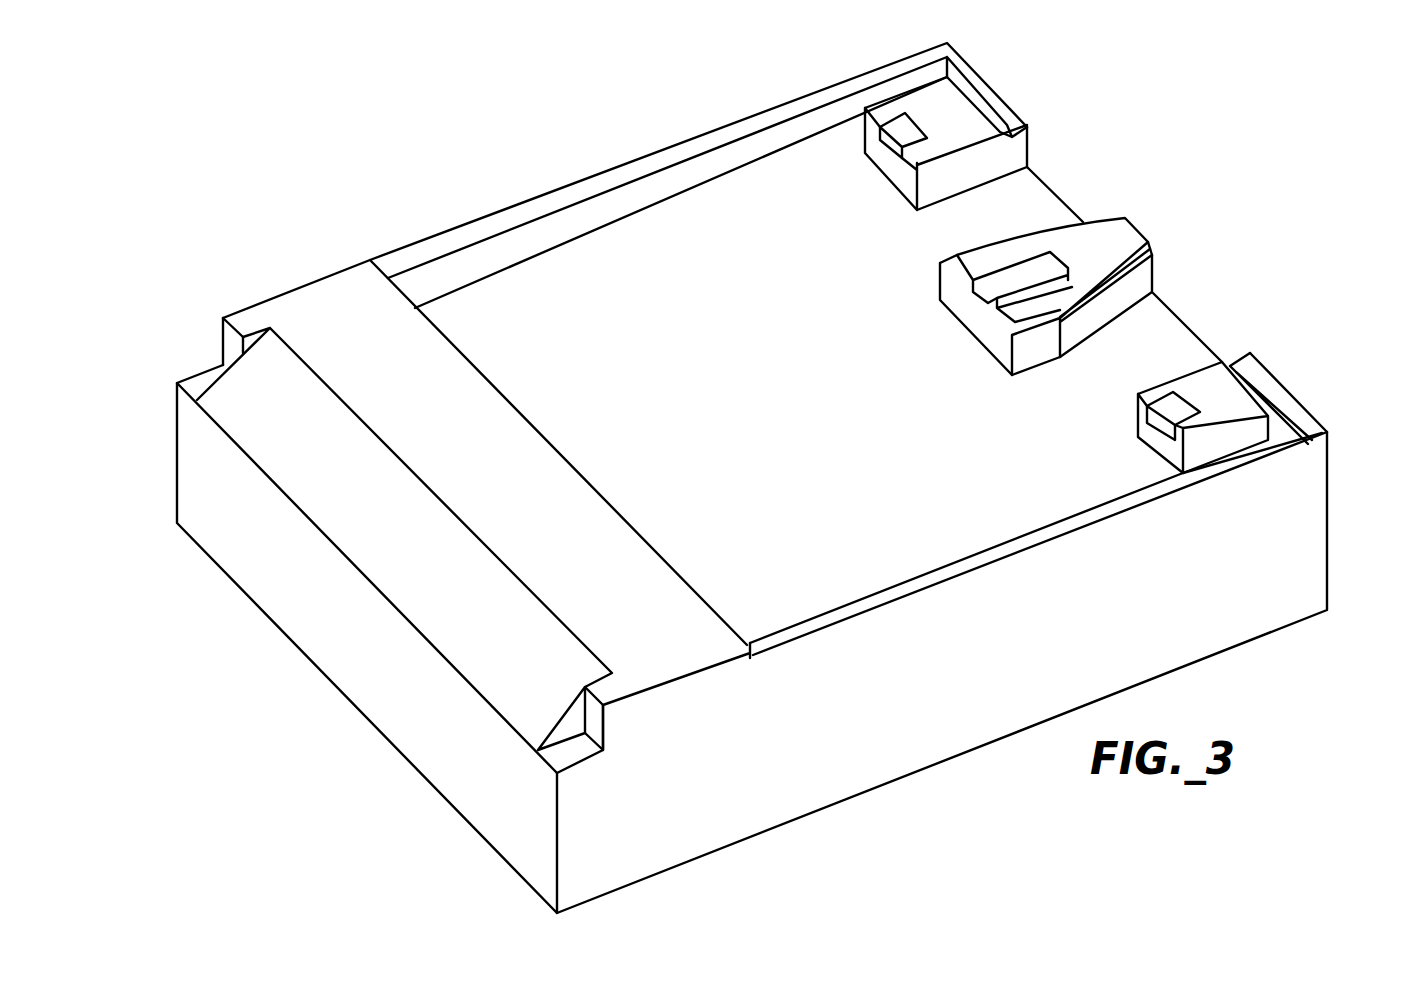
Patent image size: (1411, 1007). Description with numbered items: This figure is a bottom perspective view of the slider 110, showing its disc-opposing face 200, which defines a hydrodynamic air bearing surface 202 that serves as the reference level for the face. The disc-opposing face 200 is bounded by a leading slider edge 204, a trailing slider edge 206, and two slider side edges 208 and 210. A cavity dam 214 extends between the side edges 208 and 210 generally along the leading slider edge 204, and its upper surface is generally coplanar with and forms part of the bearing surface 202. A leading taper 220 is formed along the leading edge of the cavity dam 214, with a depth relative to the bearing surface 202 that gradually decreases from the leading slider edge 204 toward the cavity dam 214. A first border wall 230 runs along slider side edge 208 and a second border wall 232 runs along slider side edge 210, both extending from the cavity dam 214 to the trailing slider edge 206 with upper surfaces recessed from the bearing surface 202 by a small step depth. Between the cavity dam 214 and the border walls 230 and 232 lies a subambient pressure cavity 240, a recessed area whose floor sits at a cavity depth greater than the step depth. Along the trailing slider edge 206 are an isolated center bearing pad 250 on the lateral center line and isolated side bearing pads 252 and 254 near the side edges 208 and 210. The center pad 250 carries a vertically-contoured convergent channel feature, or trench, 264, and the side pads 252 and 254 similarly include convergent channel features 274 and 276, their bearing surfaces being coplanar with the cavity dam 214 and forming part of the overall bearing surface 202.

The slider 110 is at (794, 469).
The disc-opposing face 200 is at (794, 469).
The bearing surface 202 is at (318, 303).
The leading slider edge 204 is at (323, 625).
The trailing slider edge 206 is at (1335, 500).
The slider side edge 208 is at (488, 223).
The slider side edge 210 is at (900, 740).
The cavity dam 214 is at (660, 655).
The leading taper 220 is at (305, 483).
The first border wall 230 is at (583, 187).
The second border wall 232 is at (920, 590).
The subambient pressure cavity 240 is at (818, 361).
The center bearing pad 250 is at (1085, 273).
The side bearing pad 252 is at (974, 118).
The side bearing pad 254 is at (1225, 420).
The convergent channel feature 264 is at (1048, 265).
The convergent channel feature 274 is at (903, 135).
The convergent channel feature 276 is at (1187, 397).